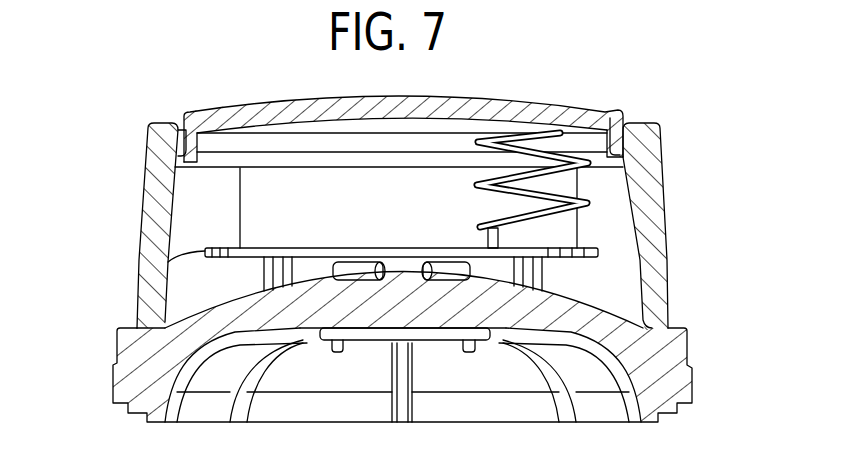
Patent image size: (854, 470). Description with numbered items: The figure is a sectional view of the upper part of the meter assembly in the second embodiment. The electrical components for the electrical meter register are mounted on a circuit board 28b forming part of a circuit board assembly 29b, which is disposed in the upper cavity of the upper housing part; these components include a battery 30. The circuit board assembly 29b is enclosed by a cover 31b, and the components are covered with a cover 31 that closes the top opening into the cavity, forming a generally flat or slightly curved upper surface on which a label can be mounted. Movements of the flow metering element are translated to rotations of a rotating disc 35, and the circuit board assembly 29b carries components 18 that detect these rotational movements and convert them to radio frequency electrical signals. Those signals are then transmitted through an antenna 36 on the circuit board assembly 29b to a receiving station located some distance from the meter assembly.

The cover 31 is at (702, 139).
The cover 31b is at (520, 100).
The circuit board assembly 29b is at (207, 224).
The circuit board 28b is at (137, 306).
The battery 30 is at (298, 213).
The components 18 is at (440, 262).
The antenna 36 is at (593, 205).
The rotating disc 35 is at (433, 343).